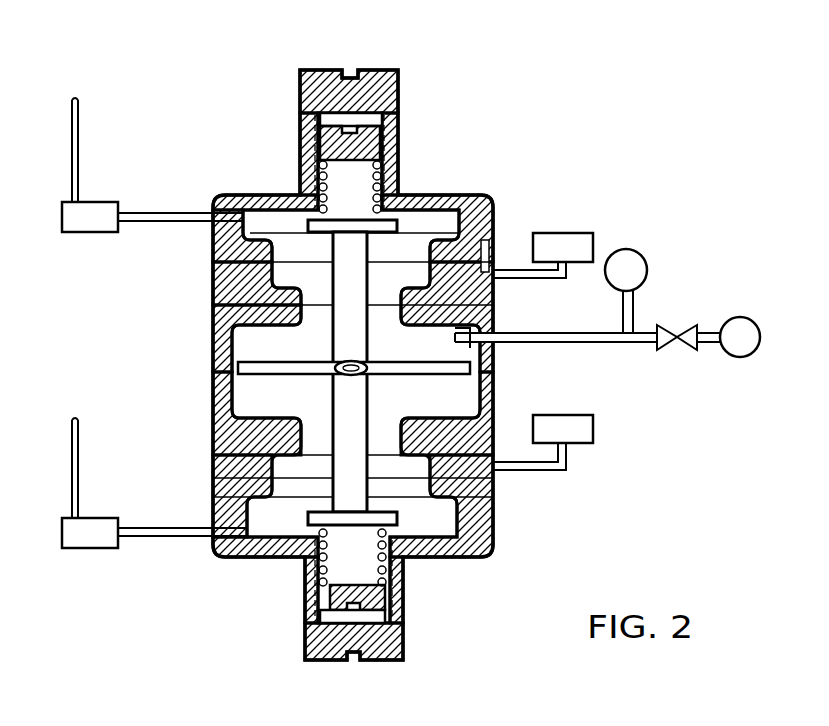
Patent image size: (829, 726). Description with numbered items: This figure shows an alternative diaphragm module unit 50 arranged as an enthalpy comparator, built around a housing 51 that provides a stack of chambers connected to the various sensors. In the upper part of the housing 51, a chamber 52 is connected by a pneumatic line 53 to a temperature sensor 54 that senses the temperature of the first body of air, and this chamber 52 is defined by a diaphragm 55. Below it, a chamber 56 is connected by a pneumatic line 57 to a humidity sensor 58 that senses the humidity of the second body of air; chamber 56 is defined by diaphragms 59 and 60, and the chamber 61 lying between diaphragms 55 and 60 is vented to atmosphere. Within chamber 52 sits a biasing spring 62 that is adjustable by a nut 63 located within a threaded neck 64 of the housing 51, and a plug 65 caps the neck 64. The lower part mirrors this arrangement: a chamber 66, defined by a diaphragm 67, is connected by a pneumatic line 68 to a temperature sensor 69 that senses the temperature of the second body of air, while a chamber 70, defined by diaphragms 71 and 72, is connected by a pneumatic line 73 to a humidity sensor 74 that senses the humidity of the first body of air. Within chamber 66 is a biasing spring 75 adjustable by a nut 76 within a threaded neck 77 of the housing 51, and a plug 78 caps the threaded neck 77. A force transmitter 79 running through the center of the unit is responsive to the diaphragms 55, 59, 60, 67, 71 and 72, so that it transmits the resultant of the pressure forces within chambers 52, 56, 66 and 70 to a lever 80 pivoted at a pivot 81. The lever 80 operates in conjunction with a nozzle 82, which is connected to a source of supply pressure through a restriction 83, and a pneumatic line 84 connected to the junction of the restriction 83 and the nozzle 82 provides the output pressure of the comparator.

The diaphragm module unit 50 is at (268, 90).
The housing 51 is at (250, 195).
The chamber 52 is at (412, 218).
The pneumatic line 53 is at (163, 212).
The temperature sensor 54 is at (78, 238).
The diaphragm 55 is at (447, 200).
The chamber 56 is at (215, 292).
The pneumatic line 57 is at (520, 280).
The humidity sensor 58 is at (568, 232).
The diaphragm 59 is at (213, 322).
The diaphragm 60 is at (213, 250).
The chamber 61 is at (495, 255).
The biasing spring 62 is at (326, 176).
The nut 63 is at (330, 147).
The threaded neck 64 is at (398, 108).
The plug 65 is at (368, 70).
The chamber 66 is at (282, 530).
The diaphragm 67 is at (480, 550).
The pneumatic line 68 is at (155, 538).
The temperature sensor 69 is at (82, 550).
The chamber 70 is at (215, 442).
The diaphragm 71 is at (493, 412).
The diaphragm 72 is at (215, 490).
The pneumatic line 73 is at (532, 472).
The humidity sensor 74 is at (588, 420).
The biasing spring 75 is at (328, 545).
The nut 76 is at (378, 600).
The threaded neck 77 is at (403, 625).
The plug 78 is at (368, 660).
The force transmitter 79 is at (330, 340).
The lever 80 is at (265, 378).
The pivot 81 is at (232, 370).
The nozzle 82 is at (497, 345).
The restriction 83 is at (680, 352).
The pneumatic line 84 is at (636, 305).